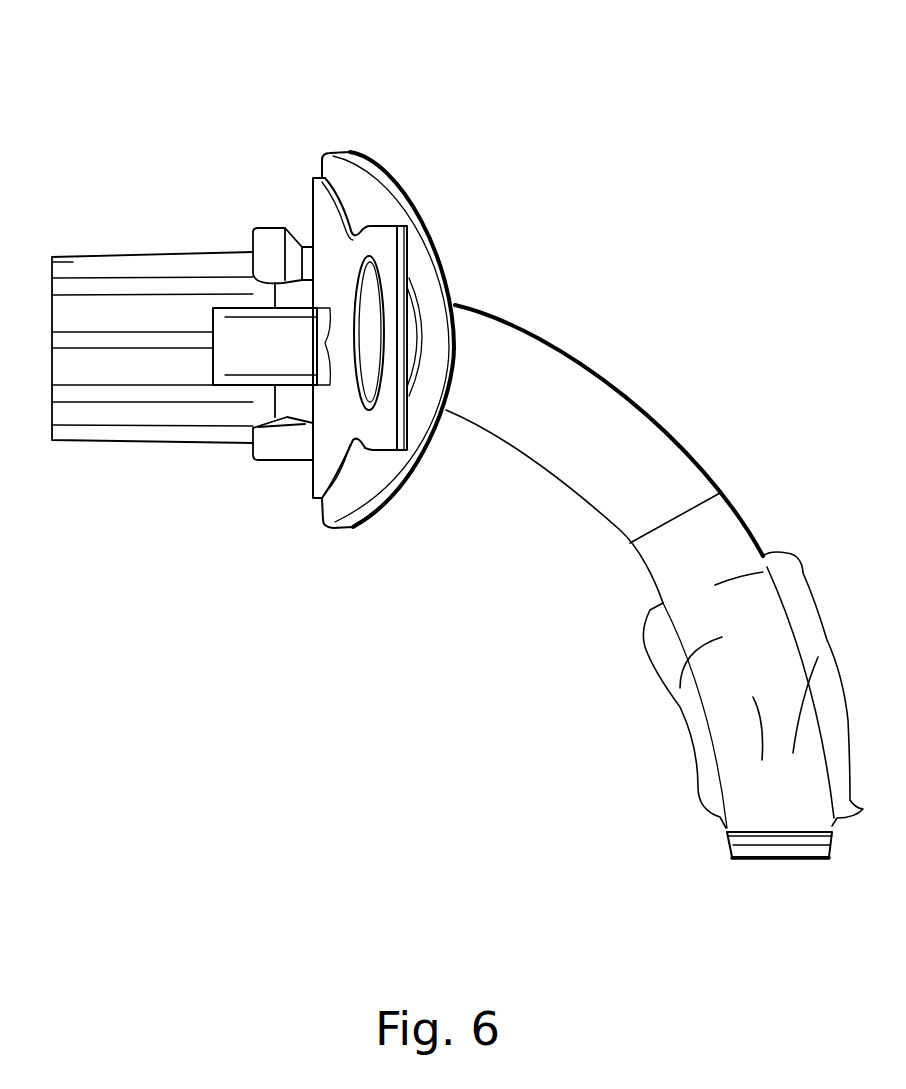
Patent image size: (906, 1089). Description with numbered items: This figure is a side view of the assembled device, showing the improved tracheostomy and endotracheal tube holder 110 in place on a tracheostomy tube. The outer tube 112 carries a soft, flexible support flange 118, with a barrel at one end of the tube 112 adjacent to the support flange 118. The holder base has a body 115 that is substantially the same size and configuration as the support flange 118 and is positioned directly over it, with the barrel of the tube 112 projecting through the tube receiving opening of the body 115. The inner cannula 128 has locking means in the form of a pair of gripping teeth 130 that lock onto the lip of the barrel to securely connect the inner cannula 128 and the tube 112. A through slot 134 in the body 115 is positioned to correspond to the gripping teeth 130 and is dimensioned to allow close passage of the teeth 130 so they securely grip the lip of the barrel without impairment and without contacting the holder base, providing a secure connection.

The tracheostomy and endotracheal tube holder 110 is at (534, 440).
The outer tube 112 is at (580, 403).
The body 115 is at (330, 218).
The support flange 118 is at (372, 210).
The inner cannula 128 is at (142, 166).
The gripping teeth 130 is at (300, 345).
The through slot 134 is at (332, 343).